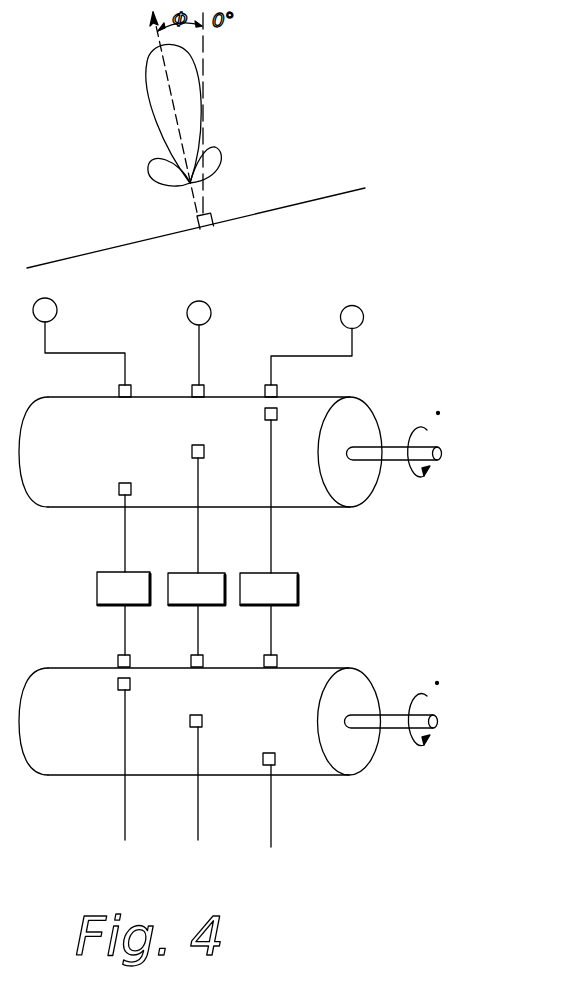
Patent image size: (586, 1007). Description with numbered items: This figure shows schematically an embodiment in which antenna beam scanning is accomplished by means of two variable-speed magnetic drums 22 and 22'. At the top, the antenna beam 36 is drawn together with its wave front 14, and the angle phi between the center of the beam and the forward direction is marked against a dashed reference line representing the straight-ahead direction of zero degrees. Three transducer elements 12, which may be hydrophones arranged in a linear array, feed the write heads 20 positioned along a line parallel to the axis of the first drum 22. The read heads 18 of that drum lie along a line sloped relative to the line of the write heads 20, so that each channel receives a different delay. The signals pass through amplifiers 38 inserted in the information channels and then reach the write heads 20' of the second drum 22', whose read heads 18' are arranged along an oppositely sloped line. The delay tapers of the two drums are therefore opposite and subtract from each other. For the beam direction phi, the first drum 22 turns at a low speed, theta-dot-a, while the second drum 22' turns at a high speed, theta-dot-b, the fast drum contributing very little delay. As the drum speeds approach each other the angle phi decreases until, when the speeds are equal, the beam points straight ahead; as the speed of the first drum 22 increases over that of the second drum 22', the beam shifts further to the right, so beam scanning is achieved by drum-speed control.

The antenna beam 36 is at (152, 97).
The wave front 14 is at (282, 210).
The transducer elements 12 is at (53, 303).
The write heads 20 is at (198, 377).
The magnetic drum 22 is at (235, 434).
The read heads 18 is at (198, 451).
The amplifiers 38 is at (260, 580).
The write heads 20' is at (197, 645).
The magnetic drum 22' is at (234, 698).
The read heads 18' is at (196, 721).